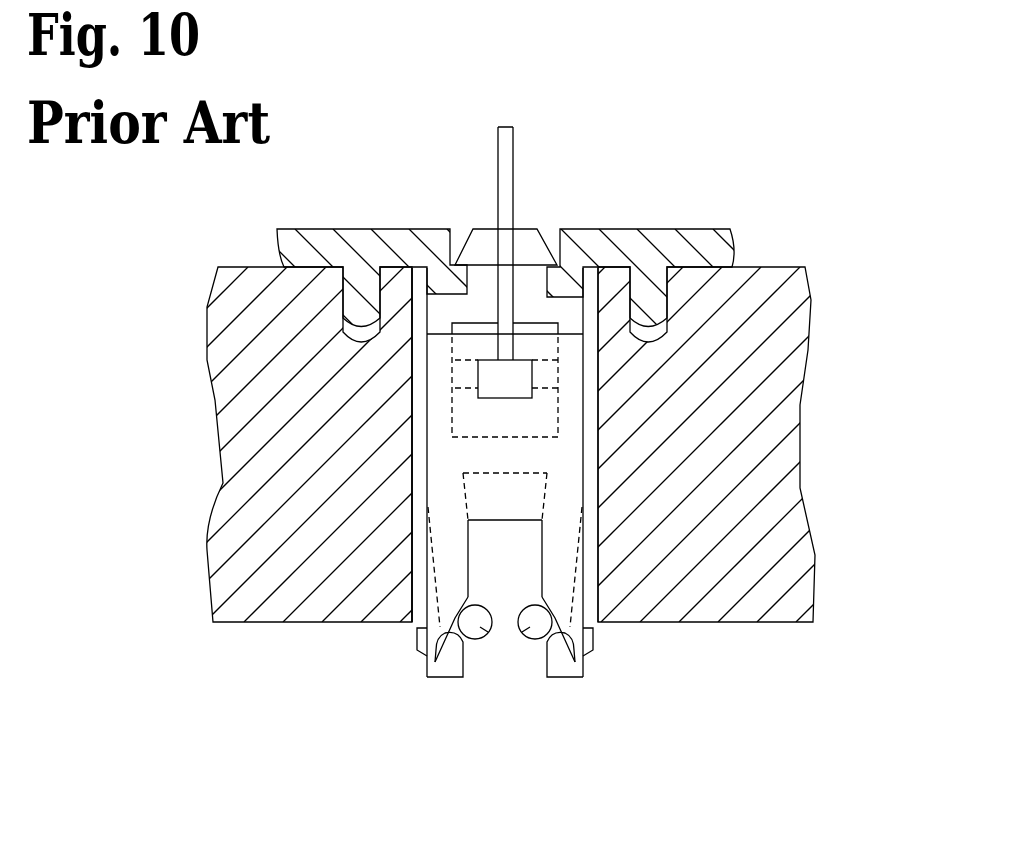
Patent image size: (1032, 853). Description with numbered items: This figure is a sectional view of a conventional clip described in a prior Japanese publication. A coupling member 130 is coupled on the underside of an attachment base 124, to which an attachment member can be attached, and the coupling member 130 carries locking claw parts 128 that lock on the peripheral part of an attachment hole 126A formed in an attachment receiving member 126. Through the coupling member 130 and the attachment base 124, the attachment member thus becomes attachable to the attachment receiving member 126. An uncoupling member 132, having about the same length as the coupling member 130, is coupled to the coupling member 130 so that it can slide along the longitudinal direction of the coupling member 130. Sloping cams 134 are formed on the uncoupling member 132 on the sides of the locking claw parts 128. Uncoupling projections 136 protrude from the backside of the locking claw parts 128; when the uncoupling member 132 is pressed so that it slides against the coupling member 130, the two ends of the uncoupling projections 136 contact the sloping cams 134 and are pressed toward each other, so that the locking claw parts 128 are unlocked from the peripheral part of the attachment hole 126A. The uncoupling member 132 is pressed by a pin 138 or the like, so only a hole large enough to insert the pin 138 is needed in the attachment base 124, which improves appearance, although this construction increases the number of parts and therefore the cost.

The attachment base 124 is at (697, 240).
The attachment receiving member 126 is at (826, 322).
The attachment hole 126A is at (408, 444).
The locking claw parts 128 is at (417, 640).
The coupling member 130 is at (594, 560).
The uncoupling member 132 is at (595, 445).
The sloping cams 134 is at (436, 664).
The uncoupling projections 136 is at (521, 635).
The pin 138 is at (513, 163).